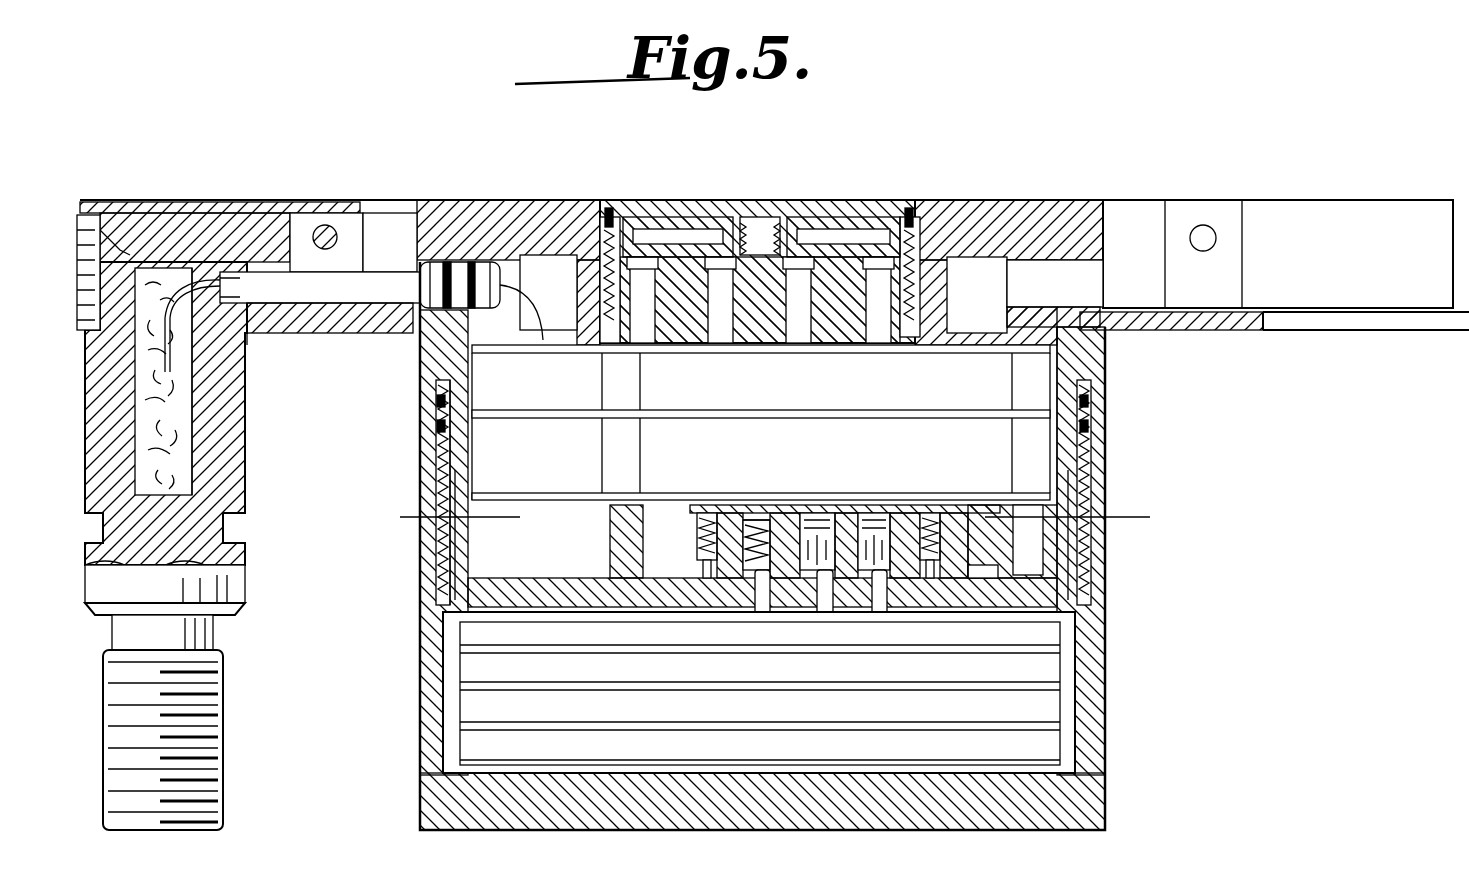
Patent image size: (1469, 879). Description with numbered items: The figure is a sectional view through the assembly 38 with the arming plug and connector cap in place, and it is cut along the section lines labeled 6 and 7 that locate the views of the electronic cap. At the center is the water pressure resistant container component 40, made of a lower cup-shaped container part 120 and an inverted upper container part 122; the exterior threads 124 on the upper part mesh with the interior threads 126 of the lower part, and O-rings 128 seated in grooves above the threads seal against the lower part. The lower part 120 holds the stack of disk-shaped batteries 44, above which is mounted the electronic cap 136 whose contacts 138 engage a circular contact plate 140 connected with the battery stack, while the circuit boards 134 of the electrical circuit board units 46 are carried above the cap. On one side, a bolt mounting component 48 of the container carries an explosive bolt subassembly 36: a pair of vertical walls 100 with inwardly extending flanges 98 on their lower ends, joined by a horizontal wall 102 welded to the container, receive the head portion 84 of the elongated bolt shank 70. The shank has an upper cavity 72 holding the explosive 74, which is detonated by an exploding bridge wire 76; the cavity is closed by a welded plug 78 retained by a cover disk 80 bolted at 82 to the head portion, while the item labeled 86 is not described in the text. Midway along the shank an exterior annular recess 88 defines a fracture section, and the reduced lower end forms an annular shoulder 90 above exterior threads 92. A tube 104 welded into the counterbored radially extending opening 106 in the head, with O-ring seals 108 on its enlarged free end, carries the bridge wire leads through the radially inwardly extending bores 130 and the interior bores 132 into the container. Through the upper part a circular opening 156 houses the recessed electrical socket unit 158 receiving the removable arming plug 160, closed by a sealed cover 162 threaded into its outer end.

The explosive bolt subassembly 36 is at (243, 200).
The assembly 38 is at (1008, 160).
The water pressure resistant container component 40 is at (1110, 596).
The batteries 44 is at (1078, 672).
The electrical circuit board units 46 is at (1062, 385).
The bolt mounting component 48 is at (408, 200).
The bolt shank 70 is at (236, 468).
The cavity 72 is at (190, 430).
The explosive 74 is at (192, 395).
The exploding bridge wire 76 is at (170, 345).
The welded plug 78 is at (170, 248).
The cover disk 80 is at (115, 240).
The bolts 82 is at (88, 212).
The head portion 84 is at (260, 310).
The screw 86 is at (295, 215).
The annular recess 88 is at (240, 528).
The annular shoulder 90 is at (232, 615).
The exterior threads 92 is at (222, 740).
The inwardly extending flanges 98 is at (1365, 328).
The vertical walls 100 is at (1360, 200).
The horizontal wall 102 is at (375, 333).
The tube 104 is at (350, 280).
The counterbored radially extending opening 106 is at (258, 278).
The O-ring seals 108 is at (525, 215).
The lower container part 120 is at (1110, 772).
The upper container part 122 is at (972, 198).
The threads 124 is at (450, 450).
The interior threads 126 is at (445, 505).
The O-rings 128 is at (435, 432).
The radially inwardly extending bores 130 is at (482, 300).
The interior bores 132 is at (573, 340).
The circuit boards 134 is at (980, 350).
The electronic cap 136 is at (1090, 555).
The contacts 138 is at (878, 616).
The circular contact plate 140 is at (590, 585).
The circular opening 156 is at (905, 200).
The electrical socket unit 158 is at (690, 200).
The removable arming plug 160 is at (842, 200).
The sealed cover 162 is at (745, 200).
The section line 6 is at (763, 540).
The section line 7 is at (775, 489).